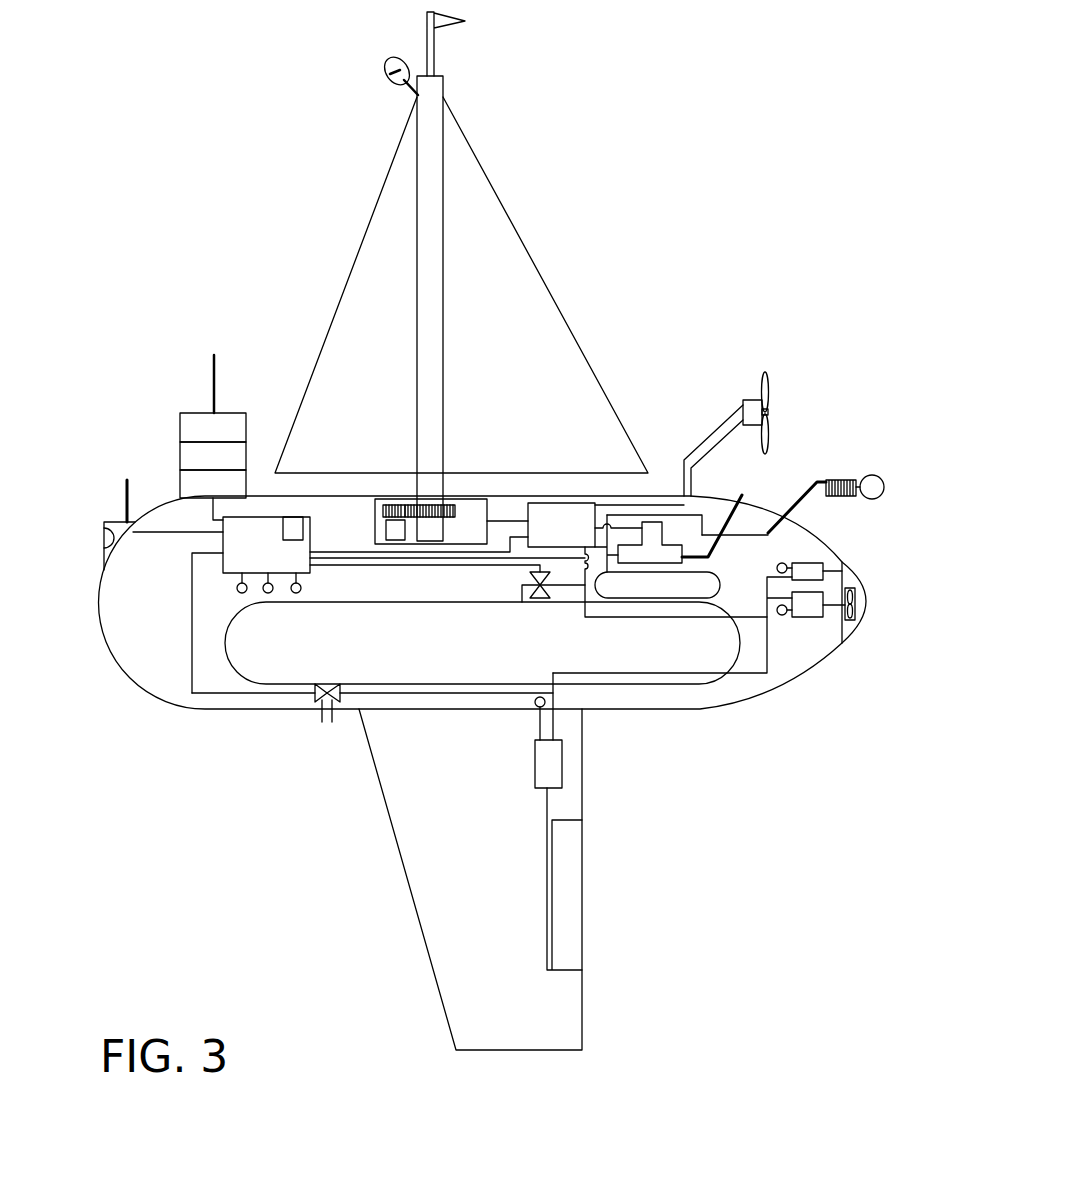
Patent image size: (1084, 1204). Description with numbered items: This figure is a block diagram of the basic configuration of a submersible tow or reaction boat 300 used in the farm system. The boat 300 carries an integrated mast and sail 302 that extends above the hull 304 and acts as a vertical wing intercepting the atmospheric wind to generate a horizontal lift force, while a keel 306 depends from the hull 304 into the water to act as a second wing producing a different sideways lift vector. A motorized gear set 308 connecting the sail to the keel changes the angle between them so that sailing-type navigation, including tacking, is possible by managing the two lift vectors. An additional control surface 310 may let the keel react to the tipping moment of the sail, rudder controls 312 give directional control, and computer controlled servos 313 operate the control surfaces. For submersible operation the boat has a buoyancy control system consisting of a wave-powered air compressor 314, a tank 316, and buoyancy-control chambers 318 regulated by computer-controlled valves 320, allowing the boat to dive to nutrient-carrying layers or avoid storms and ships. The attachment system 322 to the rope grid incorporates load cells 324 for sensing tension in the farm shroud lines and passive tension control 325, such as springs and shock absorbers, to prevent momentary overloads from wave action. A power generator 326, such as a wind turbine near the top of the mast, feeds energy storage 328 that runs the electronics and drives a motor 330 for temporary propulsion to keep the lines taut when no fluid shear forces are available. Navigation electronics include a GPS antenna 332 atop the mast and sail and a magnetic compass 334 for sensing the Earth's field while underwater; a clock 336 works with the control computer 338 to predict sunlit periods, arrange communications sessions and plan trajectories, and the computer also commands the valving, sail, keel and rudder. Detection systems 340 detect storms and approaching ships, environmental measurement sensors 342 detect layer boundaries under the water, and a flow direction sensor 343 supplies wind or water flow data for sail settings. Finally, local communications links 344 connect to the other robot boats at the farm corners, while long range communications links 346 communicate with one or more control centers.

The boat 300 is at (645, 172).
The mast and sail 302 is at (505, 268).
The hull 304 is at (146, 631).
The keel 306 is at (568, 1008).
The motorized gear set 308 is at (395, 505).
The control surface 310 is at (570, 860).
The rudder controls 312 is at (863, 623).
The computer controlled servos 313 is at (556, 768).
The wave-powered air compressor 314 is at (652, 537).
The tank 316 is at (657, 584).
The buoyancy-control chambers 318 is at (482, 643).
The computer-controlled valves 320 is at (533, 581).
The attachment system 322 is at (866, 478).
The load cells 324 is at (790, 502).
The passive tension control 325 is at (840, 496).
The power generator 326 is at (765, 385).
The energy storage 328 is at (538, 560).
The motor 330 is at (803, 620).
The GPS antenna 332 is at (398, 84).
The magnetic compass 334 is at (213, 456).
The clock 336 is at (291, 530).
The control computer 338 is at (221, 595).
The detection systems 340 is at (104, 538).
The environmental measurement sensors 342 is at (132, 482).
The flow direction sensor 343 is at (437, 50).
The local communications links 344 is at (213, 484).
The long range communications links 346 is at (213, 399).